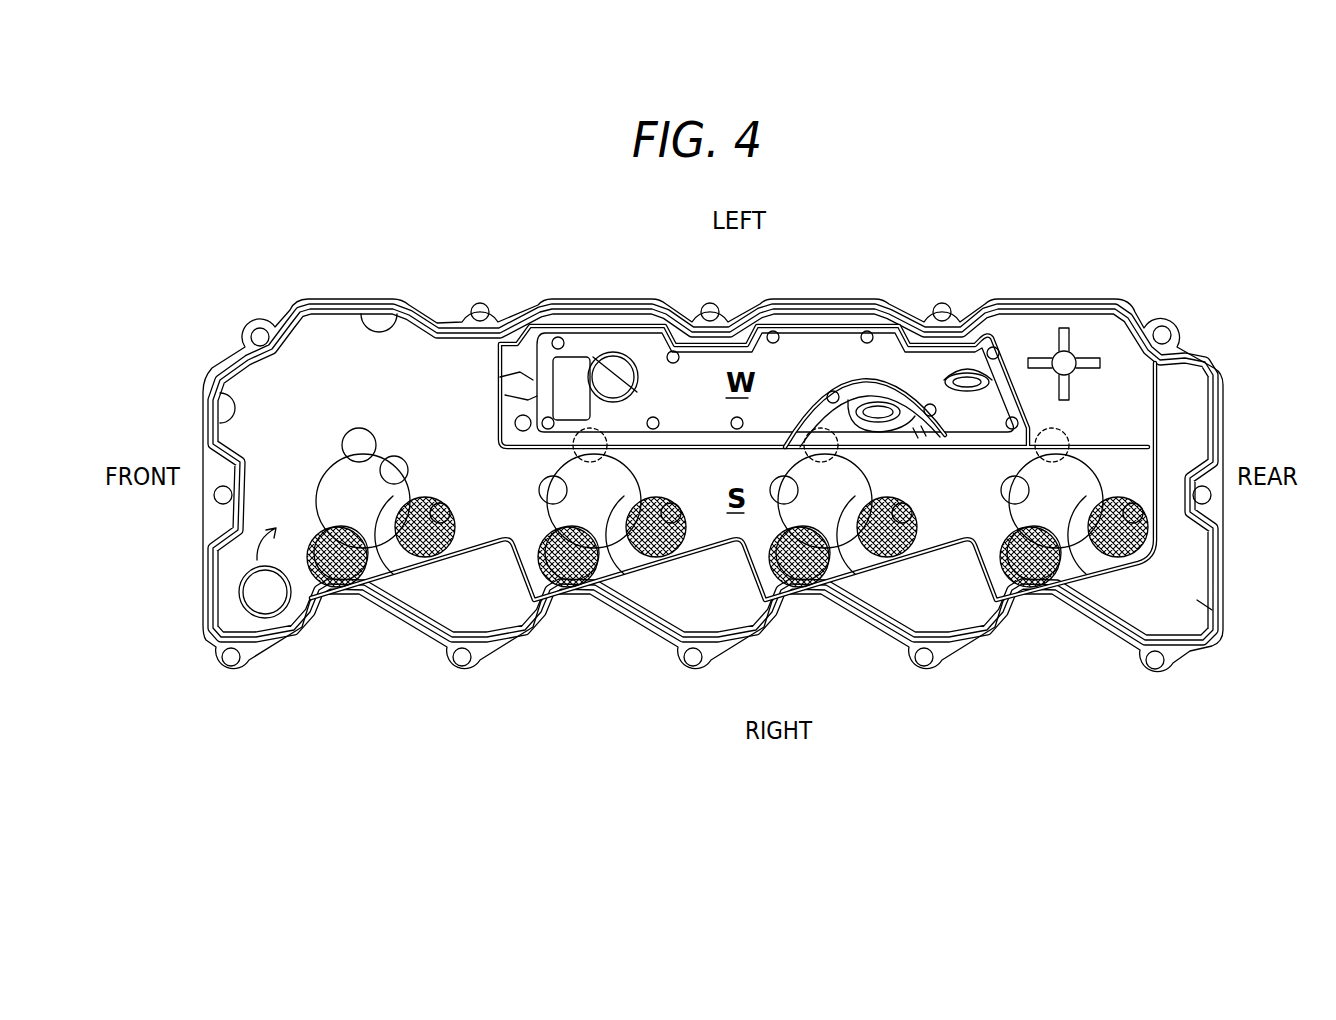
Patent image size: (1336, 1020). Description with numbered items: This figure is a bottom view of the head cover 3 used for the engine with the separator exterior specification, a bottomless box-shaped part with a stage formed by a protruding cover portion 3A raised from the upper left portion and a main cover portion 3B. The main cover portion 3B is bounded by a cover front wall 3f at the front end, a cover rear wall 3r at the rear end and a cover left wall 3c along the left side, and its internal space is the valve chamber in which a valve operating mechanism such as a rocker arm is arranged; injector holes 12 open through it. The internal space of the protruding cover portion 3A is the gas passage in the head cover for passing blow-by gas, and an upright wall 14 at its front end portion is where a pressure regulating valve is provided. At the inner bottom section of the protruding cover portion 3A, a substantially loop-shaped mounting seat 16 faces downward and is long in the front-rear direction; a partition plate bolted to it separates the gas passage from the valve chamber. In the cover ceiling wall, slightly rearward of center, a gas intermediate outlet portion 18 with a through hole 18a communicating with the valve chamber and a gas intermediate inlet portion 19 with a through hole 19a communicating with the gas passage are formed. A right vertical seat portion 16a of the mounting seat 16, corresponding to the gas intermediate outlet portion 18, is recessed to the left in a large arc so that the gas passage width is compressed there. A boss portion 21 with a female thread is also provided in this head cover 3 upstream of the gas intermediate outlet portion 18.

The head cover 3 is at (1231, 362).
The protruding cover portion 3A is at (623, 332).
The main cover portion 3B is at (288, 618).
The cover left wall 3c is at (397, 320).
The cover front wall 3f is at (204, 391).
The cover rear wall 3r is at (1196, 610).
The injector hole 12 is at (394, 456).
The upright wall 14 is at (575, 348).
The mounting seat 16 is at (806, 325).
The right vertical seat portion 16a is at (884, 372).
The gas intermediate outlet portion 18 is at (864, 400).
The through hole 18a is at (888, 430).
The gas intermediate inlet portion 19 is at (968, 365).
The through hole 19a is at (976, 400).
The boss portion 21 is at (1068, 358).